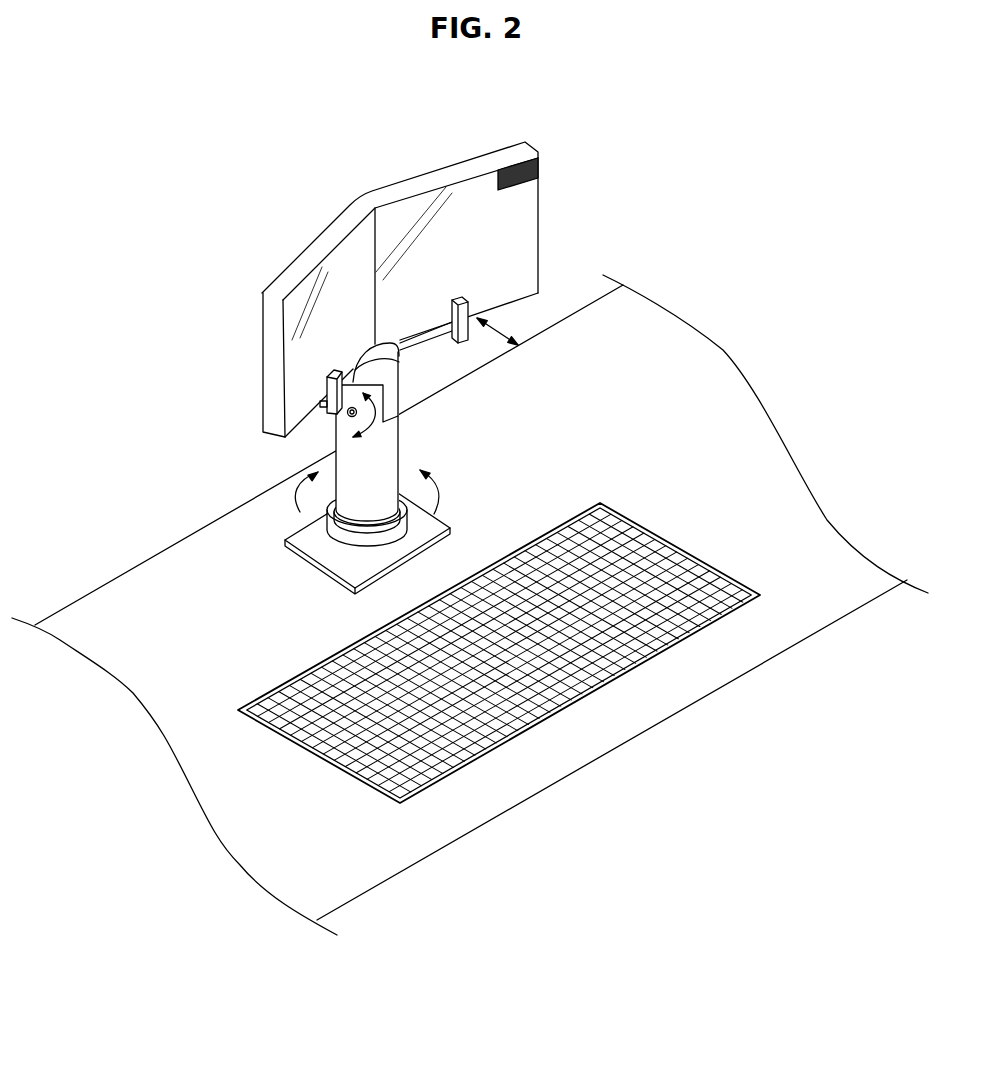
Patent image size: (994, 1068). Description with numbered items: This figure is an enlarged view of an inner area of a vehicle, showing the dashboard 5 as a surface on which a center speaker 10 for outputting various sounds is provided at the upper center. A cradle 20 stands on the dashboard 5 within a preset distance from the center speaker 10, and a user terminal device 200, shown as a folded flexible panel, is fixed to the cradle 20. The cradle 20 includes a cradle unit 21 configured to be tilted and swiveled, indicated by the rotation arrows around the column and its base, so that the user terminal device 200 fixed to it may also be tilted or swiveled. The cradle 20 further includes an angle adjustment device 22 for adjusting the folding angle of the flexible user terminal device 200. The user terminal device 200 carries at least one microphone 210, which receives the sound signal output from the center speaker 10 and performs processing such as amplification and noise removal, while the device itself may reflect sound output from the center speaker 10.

The dashboard 5 is at (635, 343).
The center speaker 10 is at (650, 640).
The cradle 20 is at (358, 445).
The cradle unit 21 is at (335, 443).
The angle adjustment device 22 is at (327, 390).
The user terminal device 200 is at (420, 183).
The microphone 210 is at (540, 163).